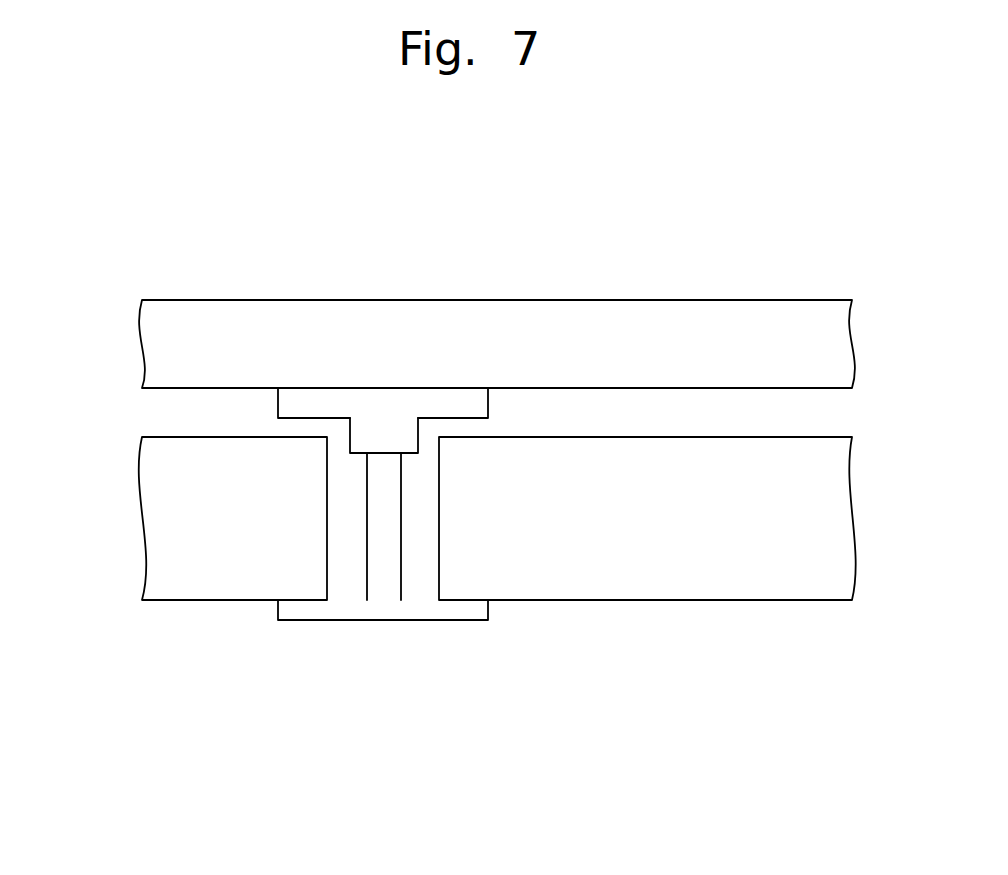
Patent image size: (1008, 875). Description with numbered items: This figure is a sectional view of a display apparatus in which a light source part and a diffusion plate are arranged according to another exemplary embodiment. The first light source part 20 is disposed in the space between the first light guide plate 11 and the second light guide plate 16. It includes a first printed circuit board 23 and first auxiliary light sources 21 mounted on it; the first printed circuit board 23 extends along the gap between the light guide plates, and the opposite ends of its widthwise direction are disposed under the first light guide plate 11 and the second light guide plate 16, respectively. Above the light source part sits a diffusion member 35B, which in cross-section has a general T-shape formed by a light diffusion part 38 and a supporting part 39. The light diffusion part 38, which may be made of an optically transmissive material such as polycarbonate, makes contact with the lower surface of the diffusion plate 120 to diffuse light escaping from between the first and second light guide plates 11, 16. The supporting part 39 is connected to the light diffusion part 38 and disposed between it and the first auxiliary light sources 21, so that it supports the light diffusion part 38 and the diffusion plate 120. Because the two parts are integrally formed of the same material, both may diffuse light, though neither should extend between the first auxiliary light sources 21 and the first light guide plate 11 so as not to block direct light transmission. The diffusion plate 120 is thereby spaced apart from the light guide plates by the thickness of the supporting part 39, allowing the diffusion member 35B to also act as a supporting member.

The diffusion plate 120 is at (155, 348).
The diffusion member 35B is at (383, 330).
The light diffusion part 38 is at (447, 400).
The supporting part 39 is at (383, 433).
The first light guide plate 11 is at (198, 582).
The second light guide plate 16 is at (640, 582).
The first light source part 20 is at (383, 593).
The first auxiliary light sources 21 is at (385, 582).
The first printed circuit board 23 is at (370, 687).